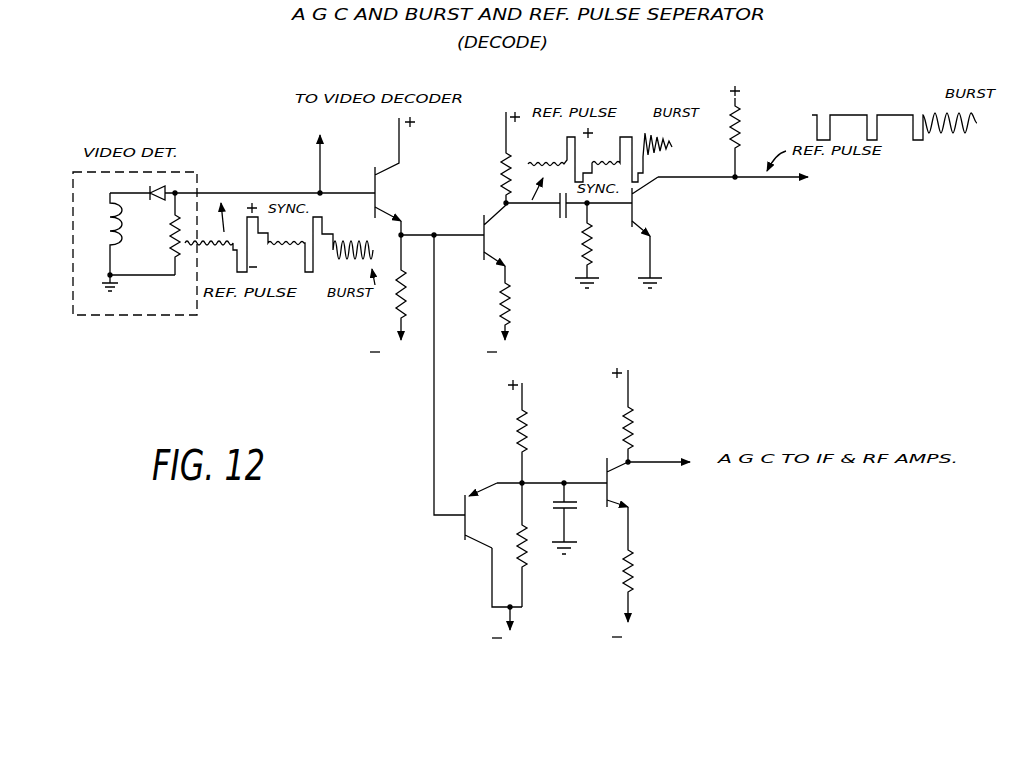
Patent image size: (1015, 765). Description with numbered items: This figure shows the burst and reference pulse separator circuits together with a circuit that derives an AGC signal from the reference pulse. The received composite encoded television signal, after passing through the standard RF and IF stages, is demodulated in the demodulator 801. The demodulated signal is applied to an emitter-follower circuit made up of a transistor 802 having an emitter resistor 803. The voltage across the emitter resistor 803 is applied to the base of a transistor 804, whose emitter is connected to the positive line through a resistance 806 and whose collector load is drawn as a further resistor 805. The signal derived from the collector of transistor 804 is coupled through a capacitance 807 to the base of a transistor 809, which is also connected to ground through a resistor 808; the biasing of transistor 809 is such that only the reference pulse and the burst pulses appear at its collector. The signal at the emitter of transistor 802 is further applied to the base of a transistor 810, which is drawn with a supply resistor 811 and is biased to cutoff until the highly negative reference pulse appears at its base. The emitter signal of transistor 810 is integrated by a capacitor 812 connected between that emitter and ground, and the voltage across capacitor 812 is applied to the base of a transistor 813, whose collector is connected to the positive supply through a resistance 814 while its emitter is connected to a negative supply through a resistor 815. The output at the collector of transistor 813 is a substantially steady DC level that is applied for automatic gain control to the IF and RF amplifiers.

The demodulator 801 is at (103, 316).
The transistor 802 is at (393, 176).
The emitter resistor 803 is at (403, 298).
The transistor 804 is at (481, 227).
The resistor 805 is at (513, 297).
The resistance 806 is at (502, 182).
The capacitor 807 is at (564, 220).
The resistor 808 is at (592, 240).
The transistor 809 is at (652, 186).
The transistor 810 is at (468, 492).
The resistor 811 is at (526, 432).
The capacitor 812 is at (571, 529).
The transistor 813 is at (620, 489).
The resistance 814 is at (633, 421).
The resistor 815 is at (636, 570).